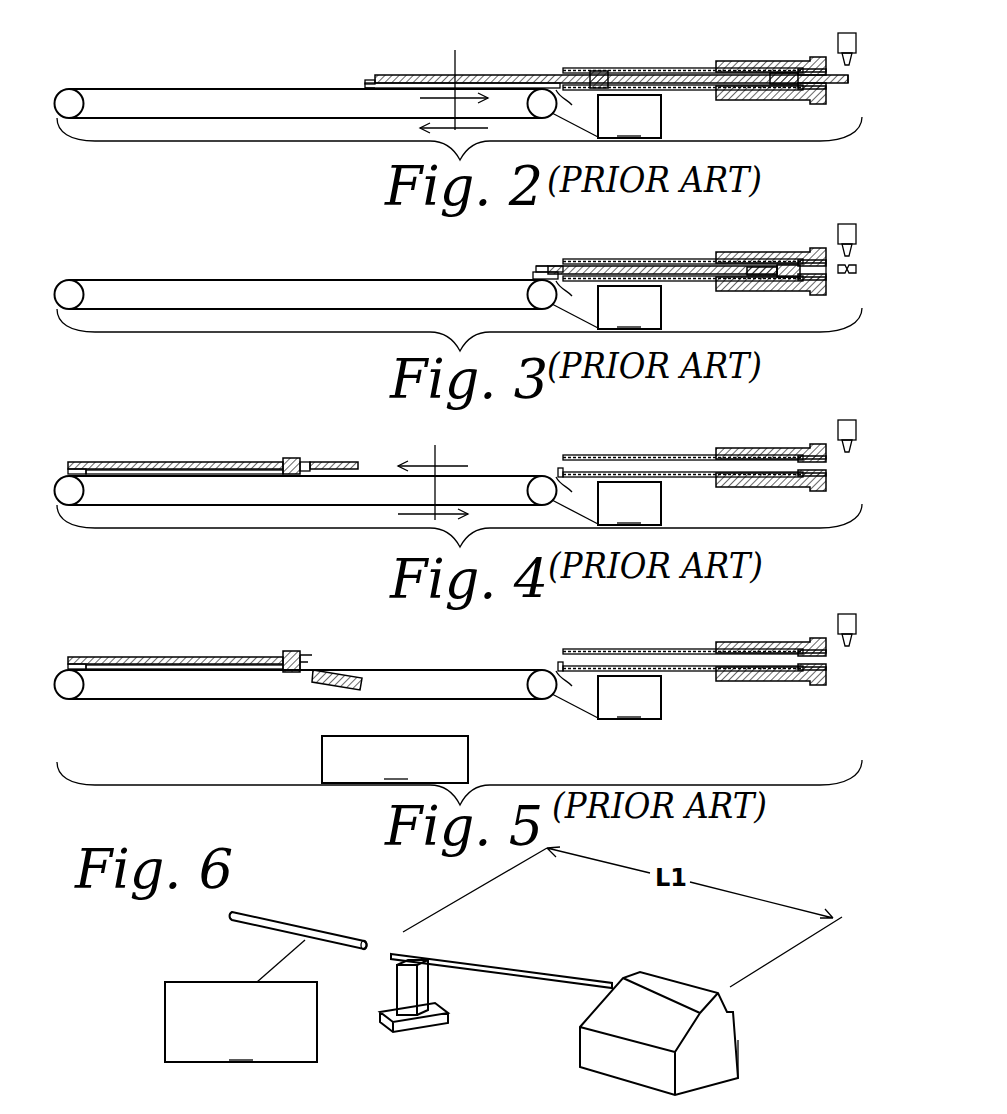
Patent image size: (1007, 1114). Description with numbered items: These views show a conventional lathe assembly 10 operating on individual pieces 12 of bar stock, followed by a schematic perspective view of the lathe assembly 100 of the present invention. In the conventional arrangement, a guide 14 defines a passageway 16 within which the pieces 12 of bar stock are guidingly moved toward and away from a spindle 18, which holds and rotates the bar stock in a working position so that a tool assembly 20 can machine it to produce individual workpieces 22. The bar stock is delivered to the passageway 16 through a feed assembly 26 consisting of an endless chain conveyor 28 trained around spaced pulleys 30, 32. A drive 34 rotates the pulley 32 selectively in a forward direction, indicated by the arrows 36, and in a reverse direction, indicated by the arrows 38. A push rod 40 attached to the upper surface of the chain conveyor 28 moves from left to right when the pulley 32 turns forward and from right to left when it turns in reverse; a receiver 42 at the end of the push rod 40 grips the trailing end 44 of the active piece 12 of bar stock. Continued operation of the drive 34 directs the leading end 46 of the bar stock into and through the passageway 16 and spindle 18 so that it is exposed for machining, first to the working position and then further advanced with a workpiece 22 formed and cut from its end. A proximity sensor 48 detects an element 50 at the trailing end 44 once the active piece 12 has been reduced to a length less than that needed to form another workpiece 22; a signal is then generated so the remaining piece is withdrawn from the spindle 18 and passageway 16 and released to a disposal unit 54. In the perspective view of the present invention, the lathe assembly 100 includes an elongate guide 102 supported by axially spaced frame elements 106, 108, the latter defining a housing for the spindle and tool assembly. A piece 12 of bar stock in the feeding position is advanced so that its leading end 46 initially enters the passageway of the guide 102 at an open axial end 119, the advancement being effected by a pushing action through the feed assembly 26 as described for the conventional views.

In FIG. 2, the lathe assembly 10 is at (596, 48).
In FIG. 3, the lathe assembly 10 is at (630, 223).
In FIG. 4, the lathe assembly 10 is at (620, 421).
In FIG. 5, the lathe assembly 10 is at (620, 616).
In FIG. 2, the piece of bar stock 12 is at (487, 76).
In FIG. 3, the piece of bar stock 12 is at (662, 251).
In FIG. 4, the piece of bar stock 12 is at (219, 449).
In FIG. 5, the piece of bar stock 12 is at (340, 705).
In FIG. 6, the piece of bar stock 12 is at (300, 922).
In FIG. 2, the guide 14 is at (712, 62).
In FIG. 3, the guide 14 is at (763, 252).
In FIG. 4, the guide 14 is at (763, 449).
In FIG. 5, the guide 14 is at (763, 646).
In FIG. 2, the passageway 16 is at (570, 68).
In FIG. 3, the passageway 16 is at (683, 239).
In FIG. 4, the passageway 16 is at (680, 432).
In FIG. 5, the passageway 16 is at (680, 632).
In FIG. 2, the spindle 18 is at (790, 62).
In FIG. 3, the spindle 18 is at (797, 234).
In FIG. 4, the spindle 18 is at (798, 427).
In FIG. 5, the spindle 18 is at (797, 620).
In FIG. 2, the tool assembly 20 is at (845, 33).
In FIG. 3, the tool assembly 20 is at (839, 222).
In FIG. 4, the tool assembly 20 is at (839, 415).
In FIG. 5, the tool assembly 20 is at (839, 608).
In FIG. 3, the workpiece 22 is at (868, 240).
In FIG. 2, the feed assembly 26 is at (334, 78).
In FIG. 3, the feed assembly 26 is at (494, 252).
In FIG. 4, the feed assembly 26 is at (501, 446).
In FIG. 5, the feed assembly 26 is at (521, 640).
In FIG. 6, the feed assembly 26 is at (241, 1001).
In FIG. 2, the endless chain conveyor 28 is at (207, 118).
In FIG. 3, the endless chain conveyor 28 is at (305, 282).
In FIG. 4, the endless chain conveyor 28 is at (305, 461).
In FIG. 5, the endless chain conveyor 28 is at (305, 668).
In FIG. 2, the pulley 30 is at (86, 103).
In FIG. 3, the pulley 30 is at (109, 297).
In FIG. 4, the pulley 30 is at (109, 493).
In FIG. 5, the pulley 30 is at (109, 687).
In FIG. 2, the pulley 32 is at (528, 113).
In FIG. 3, the pulley 32 is at (501, 298).
In FIG. 4, the pulley 32 is at (512, 493).
In FIG. 5, the pulley 32 is at (502, 688).
In FIG. 2, the drive 34 is at (606, 116).
In FIG. 3, the drive 34 is at (606, 307).
In FIG. 4, the drive 34 is at (606, 503).
In FIG. 5, the drive 34 is at (606, 697).
In FIG. 2, the arrows 36 is at (454, 79).
In FIG. 4, the arrows 38 is at (433, 469).
In FIG. 2, the push rod 40 is at (400, 76).
In FIG. 3, the push rod 40 is at (557, 238).
In FIG. 4, the push rod 40 is at (184, 436).
In FIG. 5, the push rod 40 is at (175, 631).
In FIG. 2, the receiver 42 is at (605, 73).
In FIG. 3, the receiver 42 is at (747, 254).
In FIG. 4, the receiver 42 is at (291, 512).
In FIG. 5, the receiver 42 is at (291, 699).
In FIG. 2, the trailing end 44 is at (665, 60).
In FIG. 3, the trailing end 44 is at (775, 243).
In FIG. 4, the trailing end 44 is at (296, 429).
In FIG. 5, the trailing end 44 is at (314, 636).
In FIG. 2, the leading end 46 is at (850, 78).
In FIG. 3, the leading end 46 is at (815, 243).
In FIG. 2, the proximity sensor 48 is at (580, 108).
In FIG. 3, the proximity sensor 48 is at (580, 299).
In FIG. 4, the proximity sensor 48 is at (580, 495).
In FIG. 5, the proximity sensor 48 is at (580, 689).
In FIG. 2, the element 50 is at (375, 88).
In FIG. 3, the element 50 is at (536, 246).
In FIG. 4, the element 50 is at (104, 436).
In FIG. 5, the element 50 is at (104, 631).
In FIG. 5, the disposal unit 54 is at (395, 759).
In FIG. 6, the lathe assembly 100 is at (634, 955).
In FIG. 6, the elongate guide 102 is at (510, 968).
In FIG. 6, the frame element 106 is at (425, 1028).
In FIG. 6, the frame element 108 is at (738, 1040).
In FIG. 6, the open axial end 119 is at (392, 950).